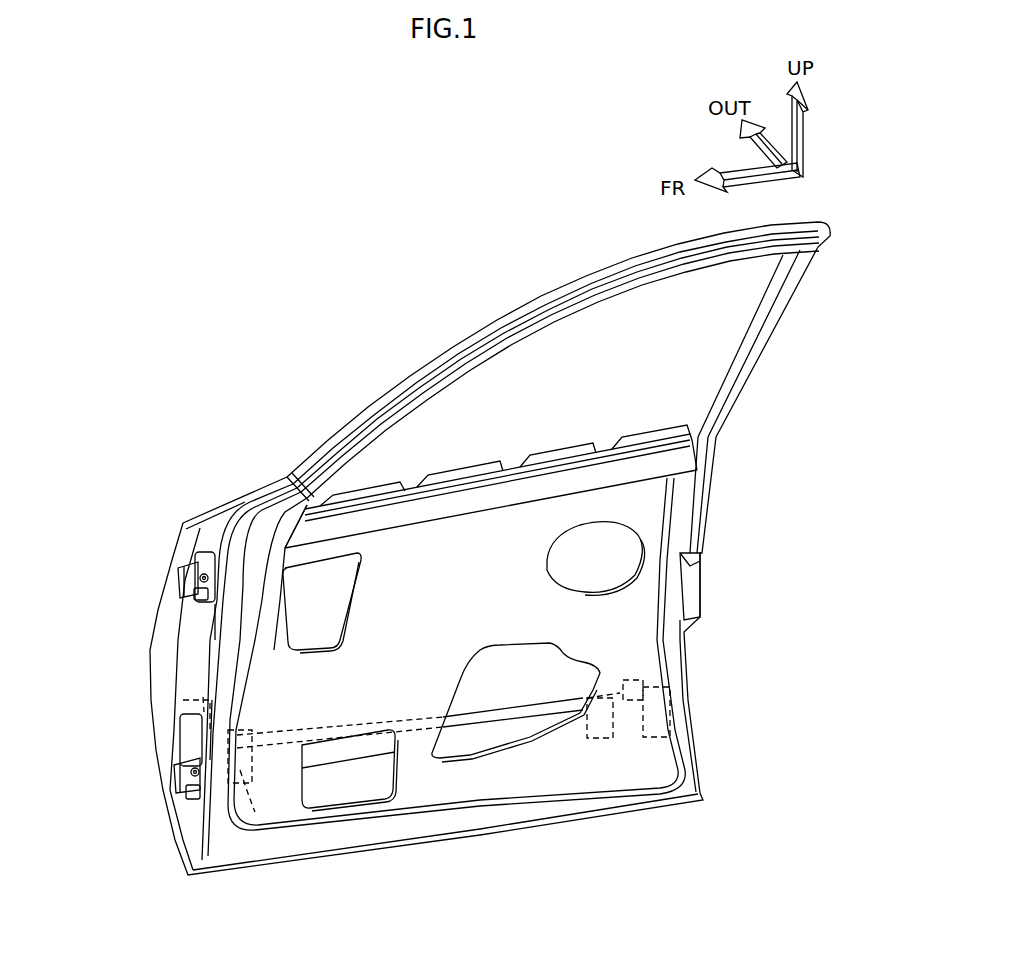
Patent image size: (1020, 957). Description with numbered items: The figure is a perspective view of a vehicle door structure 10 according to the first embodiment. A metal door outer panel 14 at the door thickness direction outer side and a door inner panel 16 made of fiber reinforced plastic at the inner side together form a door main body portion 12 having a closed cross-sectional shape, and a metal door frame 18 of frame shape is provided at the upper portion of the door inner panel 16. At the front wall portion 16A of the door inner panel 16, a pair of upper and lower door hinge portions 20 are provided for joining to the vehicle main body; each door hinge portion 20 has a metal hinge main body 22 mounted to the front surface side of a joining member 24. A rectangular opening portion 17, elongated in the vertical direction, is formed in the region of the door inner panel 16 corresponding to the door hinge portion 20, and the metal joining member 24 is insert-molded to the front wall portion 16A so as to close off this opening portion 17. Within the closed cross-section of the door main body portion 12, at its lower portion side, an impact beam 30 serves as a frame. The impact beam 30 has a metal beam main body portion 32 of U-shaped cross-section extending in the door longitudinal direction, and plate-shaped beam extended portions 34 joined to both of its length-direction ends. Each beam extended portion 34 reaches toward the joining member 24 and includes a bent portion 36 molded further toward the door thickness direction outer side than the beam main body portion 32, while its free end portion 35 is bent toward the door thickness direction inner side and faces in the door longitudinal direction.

The vehicle door structure 10 is at (156, 813).
The door main body portion 12 is at (559, 449).
The door outer panel 14 is at (200, 527).
The door inner panel 16 is at (540, 760).
The front wall portion 16A is at (195, 620).
The opening portion 17 is at (198, 600).
The door frame 18 is at (622, 260).
The door hinge portion 20 is at (187, 572).
The hinge main body 22 is at (197, 603).
The joining member 24 is at (207, 556).
The impact beam 30 is at (340, 763).
The beam main body portion 32 is at (378, 739).
The beam extended portion 34 is at (628, 685).
The free end portion 35 is at (185, 757).
The bent portion 36 is at (203, 697).